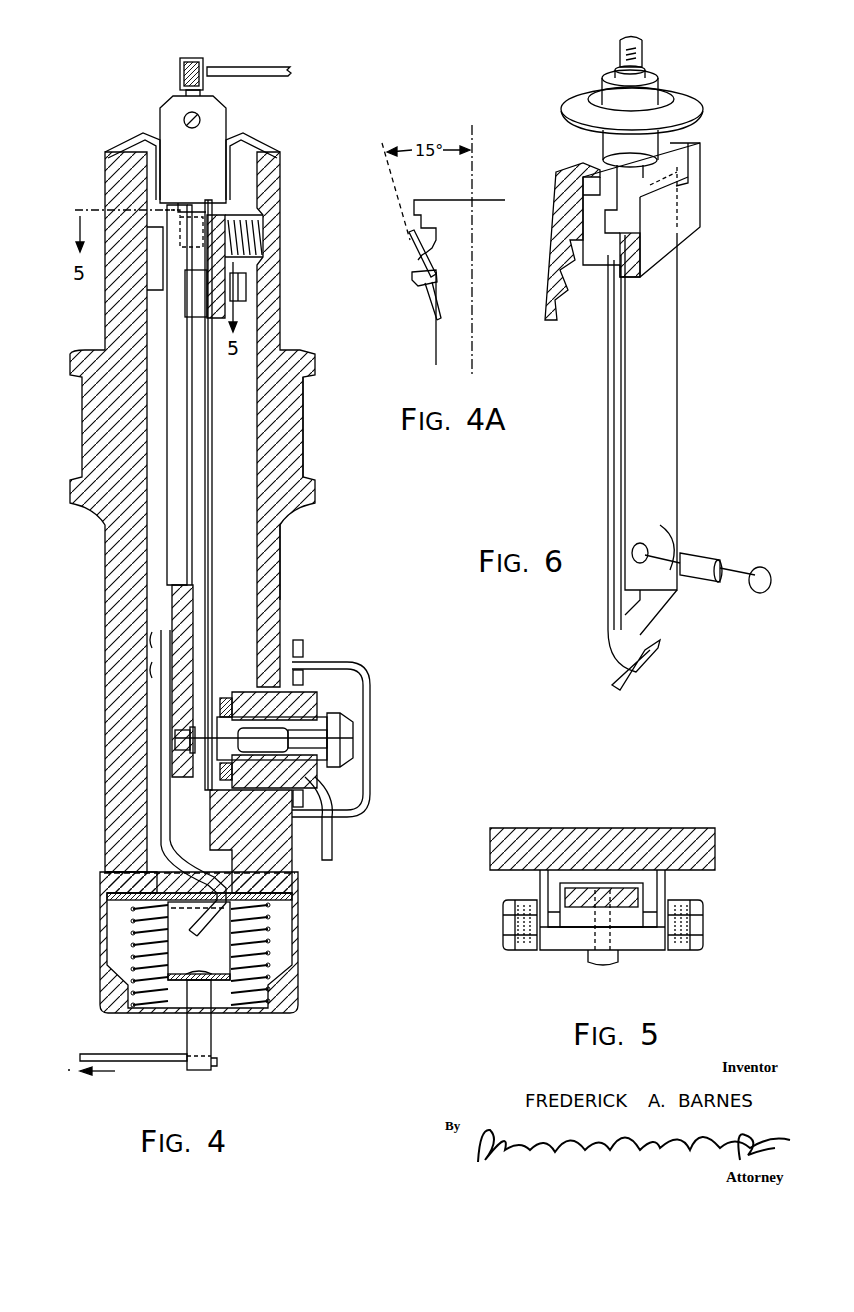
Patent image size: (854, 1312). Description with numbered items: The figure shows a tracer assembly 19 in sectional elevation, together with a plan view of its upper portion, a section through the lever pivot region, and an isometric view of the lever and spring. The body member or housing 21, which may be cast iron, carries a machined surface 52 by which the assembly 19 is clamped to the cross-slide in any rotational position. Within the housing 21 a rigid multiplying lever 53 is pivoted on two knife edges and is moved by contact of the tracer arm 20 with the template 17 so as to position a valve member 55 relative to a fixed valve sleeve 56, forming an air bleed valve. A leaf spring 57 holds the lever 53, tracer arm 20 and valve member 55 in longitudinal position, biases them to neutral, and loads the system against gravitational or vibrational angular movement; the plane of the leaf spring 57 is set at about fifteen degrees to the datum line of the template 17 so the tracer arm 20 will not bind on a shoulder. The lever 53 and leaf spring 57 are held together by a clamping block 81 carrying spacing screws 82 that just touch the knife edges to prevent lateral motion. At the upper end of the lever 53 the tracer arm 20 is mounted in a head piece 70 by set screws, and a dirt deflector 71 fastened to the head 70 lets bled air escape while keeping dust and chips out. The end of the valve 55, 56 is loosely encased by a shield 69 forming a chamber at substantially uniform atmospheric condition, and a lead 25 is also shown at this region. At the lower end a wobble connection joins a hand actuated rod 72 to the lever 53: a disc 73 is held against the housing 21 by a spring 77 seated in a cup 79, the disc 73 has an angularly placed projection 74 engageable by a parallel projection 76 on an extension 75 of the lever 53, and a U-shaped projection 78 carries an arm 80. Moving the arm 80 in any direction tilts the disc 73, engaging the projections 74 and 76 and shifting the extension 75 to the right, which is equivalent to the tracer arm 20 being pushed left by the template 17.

In FIG. 4, the template 17 is at (287, 78).
In FIG. 4A, the template 17 is at (434, 344).
In FIG. 4, the tracer assembly 19 is at (320, 566).
In FIG. 4, the tracer arm 20 is at (180, 70).
In FIG. 4A, the tracer arm 20 is at (413, 288).
In FIG. 6, the tracer arm 20 is at (619, 47).
In FIG. 4, the housing 21 is at (105, 590).
In FIG. 5, the housing 21 is at (605, 827).
In FIG. 4, the lead wire 25 is at (333, 845).
In FIG. 4, the machined surface 52 is at (305, 425).
In FIG. 4, the multiplying lever 53 is at (167, 408).
In FIG. 6, the multiplying lever 53 is at (608, 358).
In FIG. 4, the valve member 55 is at (222, 698).
In FIG. 4, the valve sleeve 56 is at (318, 712).
In FIG. 4, the leaf spring 57 is at (208, 428).
In FIG. 4A, the leaf spring 57 is at (407, 240).
In FIG. 6, the leaf spring 57 is at (680, 358).
In FIG. 4, the shield 69 is at (368, 680).
In FIG. 4, the head piece 70 is at (226, 118).
In FIG. 6, the head piece 70 is at (660, 74).
In FIG. 4, the dirt deflector 71 is at (265, 143).
In FIG. 6, the dirt deflector 71 is at (578, 105).
In FIG. 4, the hand actuated rod 72 is at (122, 1054).
In FIG. 4, the disc 73 is at (258, 904).
In FIG. 4, the angularly placed projection 74 is at (174, 930).
In FIG. 4, the extension 75 is at (162, 795).
In FIG. 4, the parallel projection 76 is at (196, 927).
In FIG. 4, the spring 77 is at (258, 956).
In FIG. 4, the U-shaped projection 78 is at (230, 961).
In FIG. 4, the cup 79 is at (298, 938).
In FIG. 4, the arm 80 is at (213, 1044).
In FIG. 6, the clamping block 81 is at (682, 225).
In FIG. 5, the clamping block 81 is at (645, 952).
In FIG. 5, the spacing screws 82 is at (503, 928).